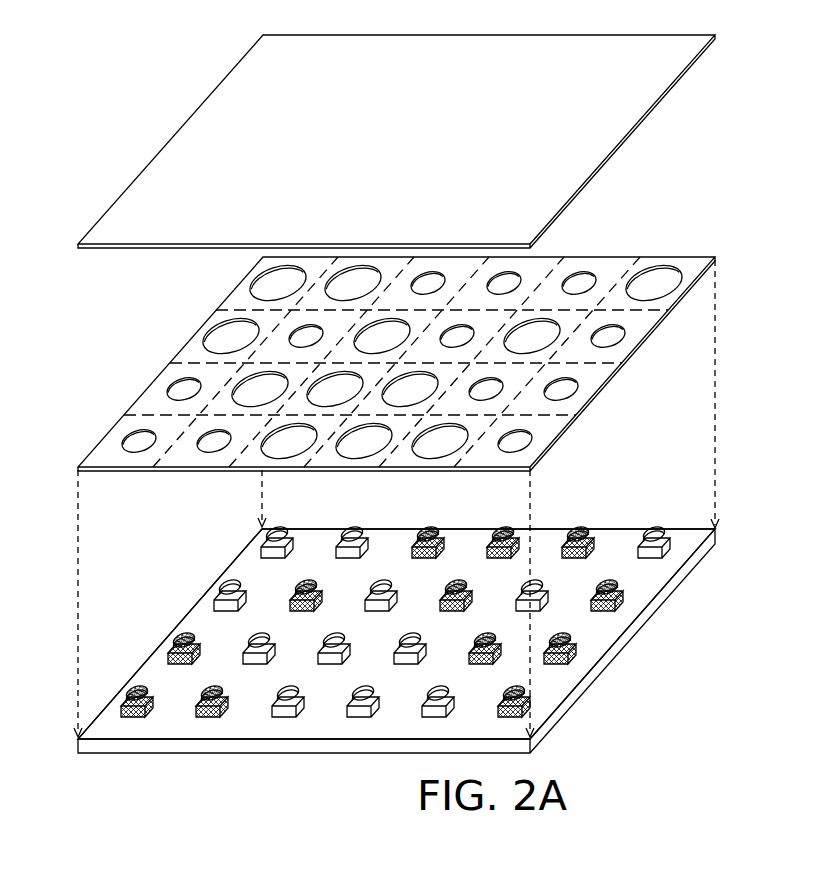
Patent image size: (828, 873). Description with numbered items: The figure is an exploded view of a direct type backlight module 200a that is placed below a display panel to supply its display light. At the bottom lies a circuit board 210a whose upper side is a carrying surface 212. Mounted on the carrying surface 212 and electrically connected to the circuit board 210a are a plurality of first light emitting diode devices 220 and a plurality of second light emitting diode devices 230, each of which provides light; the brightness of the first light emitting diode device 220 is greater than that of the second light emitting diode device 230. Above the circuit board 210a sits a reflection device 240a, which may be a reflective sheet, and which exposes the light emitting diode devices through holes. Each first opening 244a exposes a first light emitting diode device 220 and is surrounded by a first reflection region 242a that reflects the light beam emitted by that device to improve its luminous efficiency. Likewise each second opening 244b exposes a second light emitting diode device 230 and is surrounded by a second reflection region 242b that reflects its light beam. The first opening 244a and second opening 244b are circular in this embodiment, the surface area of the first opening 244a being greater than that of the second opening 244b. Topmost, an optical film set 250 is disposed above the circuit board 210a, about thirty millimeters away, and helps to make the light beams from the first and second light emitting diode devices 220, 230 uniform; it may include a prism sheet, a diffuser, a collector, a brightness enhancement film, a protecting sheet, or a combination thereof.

The backlight module 200a is at (438, 429).
The circuit board 210a is at (560, 683).
The carrying surface 212 is at (632, 623).
The first light emitting diode device 220 is at (284, 718).
The second light emitting diode device 230 is at (208, 718).
The reflection device 240a is at (648, 333).
The first reflection region 242a is at (292, 471).
The second reflection region 242b is at (151, 458).
The first opening 244a is at (282, 444).
The second opening 244b is at (137, 440).
The optical film set 250 is at (668, 73).